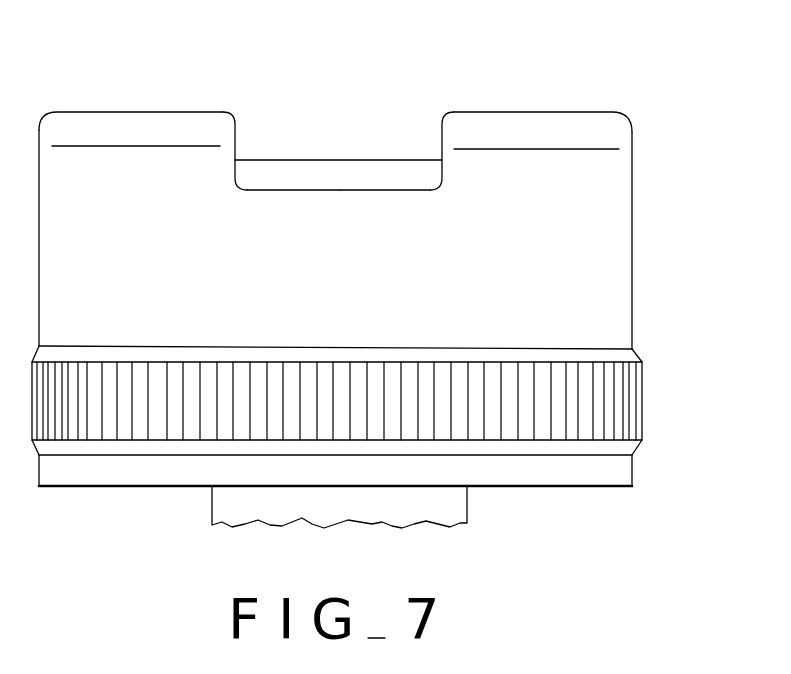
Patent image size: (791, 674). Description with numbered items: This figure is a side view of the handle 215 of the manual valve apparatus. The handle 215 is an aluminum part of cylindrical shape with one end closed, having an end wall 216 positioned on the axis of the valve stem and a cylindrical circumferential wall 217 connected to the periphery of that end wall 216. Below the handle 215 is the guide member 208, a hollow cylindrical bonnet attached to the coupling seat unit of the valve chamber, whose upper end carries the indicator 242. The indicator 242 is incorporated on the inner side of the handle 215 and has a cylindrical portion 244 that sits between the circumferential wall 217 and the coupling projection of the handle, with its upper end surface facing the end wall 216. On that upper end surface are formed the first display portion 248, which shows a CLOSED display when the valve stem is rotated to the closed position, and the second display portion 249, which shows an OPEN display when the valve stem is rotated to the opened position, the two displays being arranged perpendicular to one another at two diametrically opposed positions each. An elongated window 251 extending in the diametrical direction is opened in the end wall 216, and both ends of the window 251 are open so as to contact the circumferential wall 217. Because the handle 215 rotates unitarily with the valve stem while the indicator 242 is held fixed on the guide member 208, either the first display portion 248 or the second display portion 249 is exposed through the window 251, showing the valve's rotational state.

The guide member 208 is at (382, 508).
The handle 215 is at (591, 113).
The end wall 216 is at (157, 117).
The circumferential wall 217 is at (593, 288).
The indicator 242 is at (403, 158).
The cylindrical portion 244 is at (360, 175).
The first display portion 248 is at (305, 162).
The second display portion 249 is at (406, 100).
The window 251 is at (236, 137).